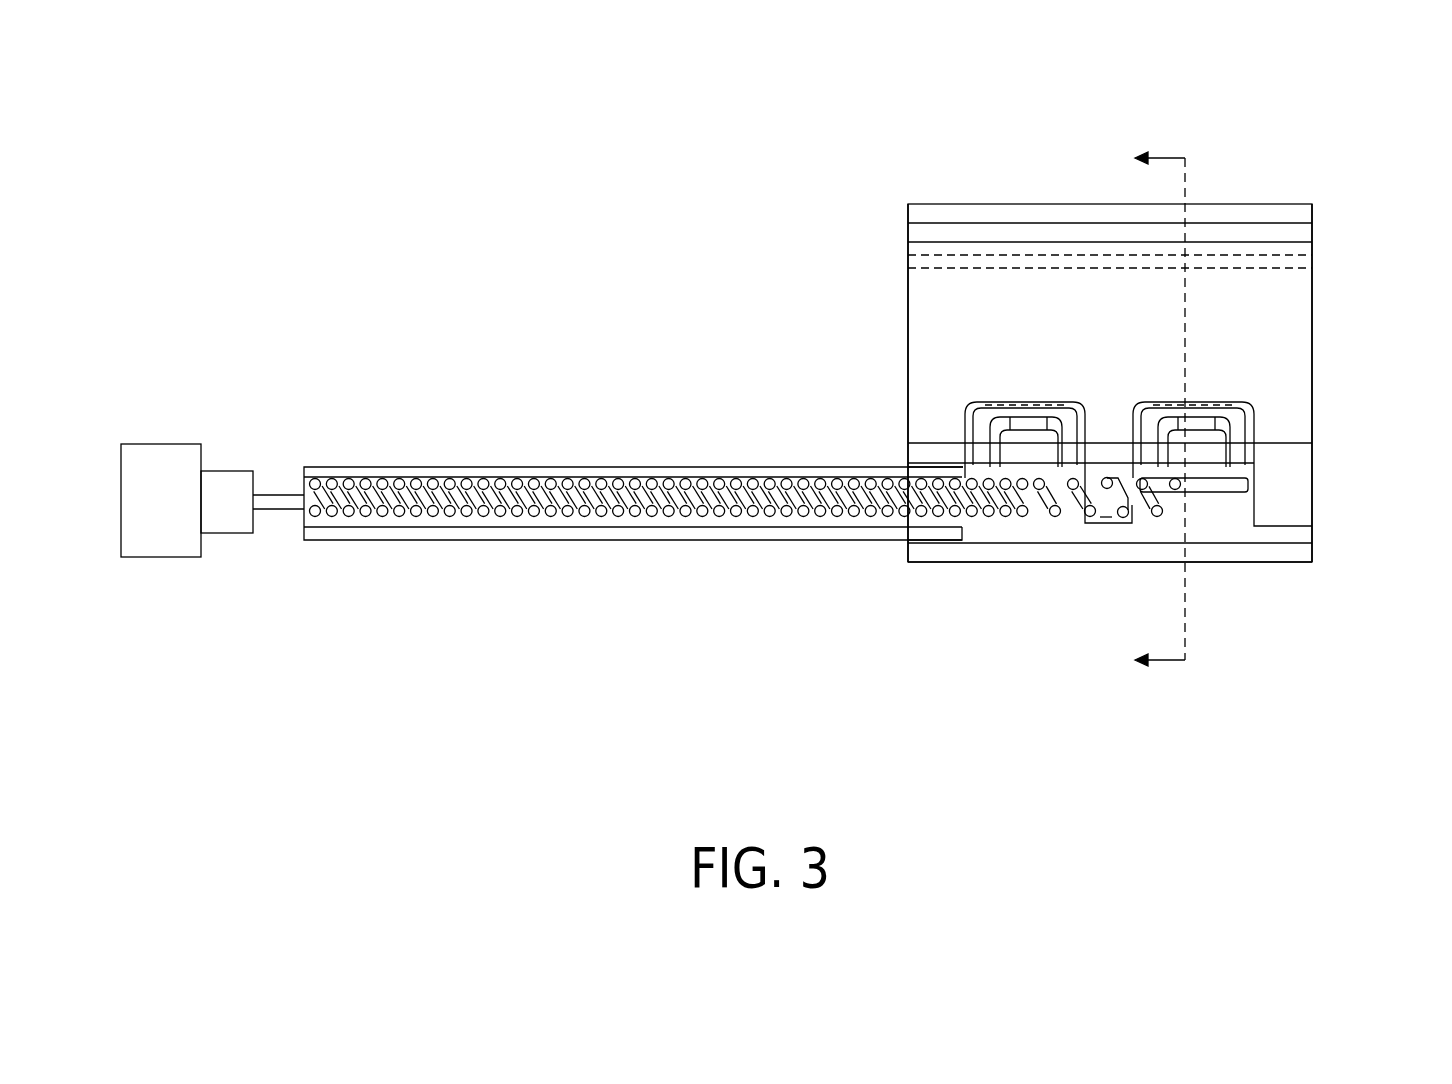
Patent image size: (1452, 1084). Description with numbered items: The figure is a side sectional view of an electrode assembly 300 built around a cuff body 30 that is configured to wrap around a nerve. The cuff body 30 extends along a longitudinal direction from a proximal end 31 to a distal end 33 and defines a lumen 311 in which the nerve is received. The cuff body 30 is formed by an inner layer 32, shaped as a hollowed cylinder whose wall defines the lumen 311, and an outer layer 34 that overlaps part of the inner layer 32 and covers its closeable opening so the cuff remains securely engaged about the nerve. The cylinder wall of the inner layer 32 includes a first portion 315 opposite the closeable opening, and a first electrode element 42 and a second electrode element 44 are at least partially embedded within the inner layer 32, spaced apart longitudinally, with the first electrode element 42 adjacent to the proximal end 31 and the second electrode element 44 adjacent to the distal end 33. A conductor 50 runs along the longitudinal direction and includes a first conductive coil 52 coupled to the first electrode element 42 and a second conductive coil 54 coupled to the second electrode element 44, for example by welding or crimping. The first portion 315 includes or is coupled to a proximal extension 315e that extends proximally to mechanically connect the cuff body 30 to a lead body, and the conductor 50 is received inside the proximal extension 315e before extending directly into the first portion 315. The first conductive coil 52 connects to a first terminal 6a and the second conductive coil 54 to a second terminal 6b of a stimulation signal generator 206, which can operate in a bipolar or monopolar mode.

The electrode assembly 300 is at (750, 188).
The cuff body 30 is at (1368, 225).
The proximal end 31 is at (907, 343).
The lumen 311 is at (1128, 343).
The inner layer 32 is at (1312, 492).
The distal end 33 is at (1312, 320).
The outer layer 34 is at (1312, 560).
The first electrode element 42 is at (1012, 445).
The second electrode element 44 is at (1208, 452).
The conductor 50 is at (448, 525).
The first conductive coil 52 is at (1007, 520).
The second conductive coil 54 is at (1145, 545).
The stimulation signal generator 206 is at (187, 500).
The first terminal 6a is at (218, 470).
The second terminal 6b is at (218, 535).
The first portion 315 is at (1073, 543).
The proximal extension 315e is at (878, 540).